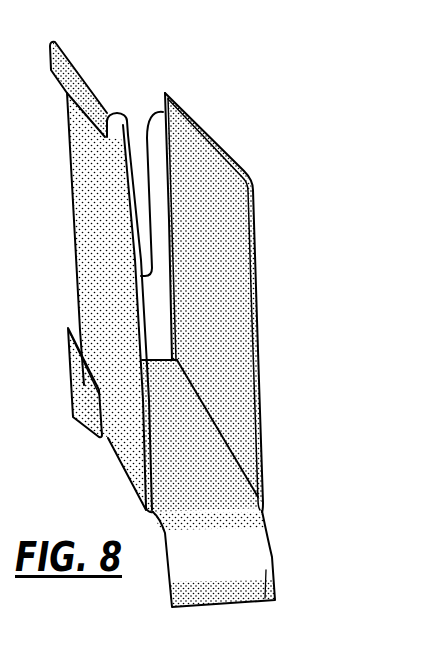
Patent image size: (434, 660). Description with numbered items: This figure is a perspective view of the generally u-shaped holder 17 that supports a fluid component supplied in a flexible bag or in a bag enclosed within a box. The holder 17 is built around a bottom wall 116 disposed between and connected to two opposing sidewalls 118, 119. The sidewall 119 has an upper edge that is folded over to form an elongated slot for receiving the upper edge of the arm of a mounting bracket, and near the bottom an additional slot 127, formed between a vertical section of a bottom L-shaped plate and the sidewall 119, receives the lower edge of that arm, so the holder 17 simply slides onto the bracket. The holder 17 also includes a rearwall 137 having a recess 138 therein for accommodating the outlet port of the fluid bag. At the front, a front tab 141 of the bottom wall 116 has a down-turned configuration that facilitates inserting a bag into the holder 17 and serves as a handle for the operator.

The holder 17 is at (238, 102).
The bottom wall 116 is at (200, 500).
The sidewall 118 is at (218, 243).
The sidewall 119 is at (90, 223).
The additional slot 127 is at (71, 318).
The rearwall 137 is at (160, 308).
The recess 138 is at (148, 247).
The front tab 141 is at (237, 560).